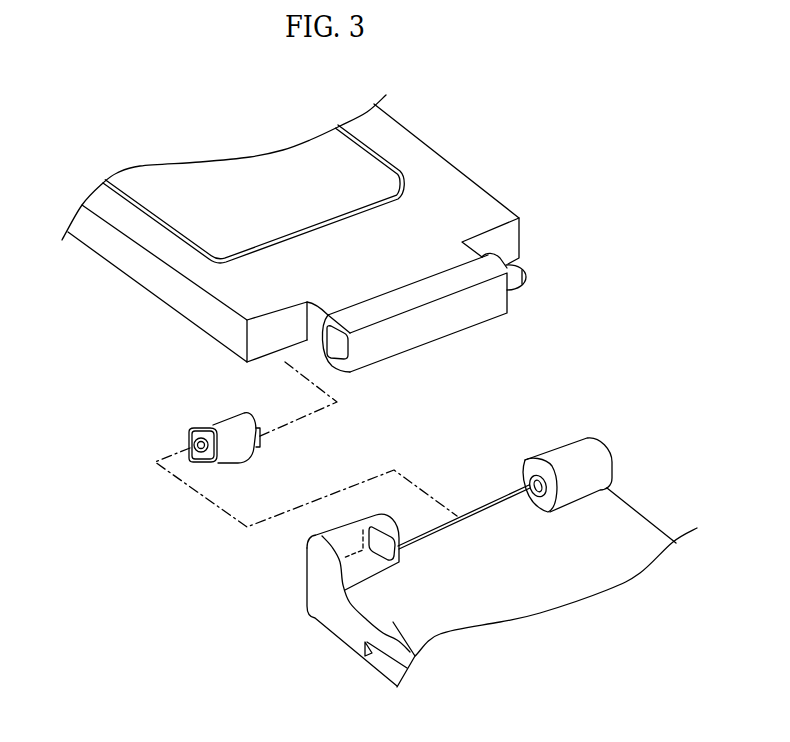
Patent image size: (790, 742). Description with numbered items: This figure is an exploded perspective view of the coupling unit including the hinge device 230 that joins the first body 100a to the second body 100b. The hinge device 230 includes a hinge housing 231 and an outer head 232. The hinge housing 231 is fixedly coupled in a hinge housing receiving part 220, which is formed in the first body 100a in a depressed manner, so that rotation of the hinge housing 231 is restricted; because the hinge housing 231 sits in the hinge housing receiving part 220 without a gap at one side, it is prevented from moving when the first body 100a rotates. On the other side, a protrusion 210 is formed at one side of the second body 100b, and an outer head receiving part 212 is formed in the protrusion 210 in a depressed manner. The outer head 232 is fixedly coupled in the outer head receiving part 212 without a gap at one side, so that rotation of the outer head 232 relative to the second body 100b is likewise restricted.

The first body 100a is at (458, 201).
The second body 100b is at (372, 652).
The protrusion 210 is at (573, 457).
The outer head receiving part 212 is at (400, 553).
The hinge housing receiving part 220 is at (322, 347).
The hinge device 230 is at (257, 444).
The hinge housing 231 is at (248, 459).
The outer head 232 is at (188, 433).